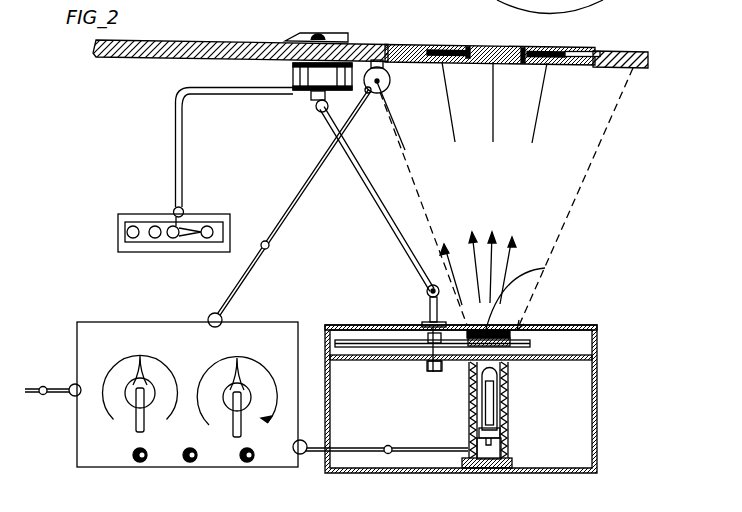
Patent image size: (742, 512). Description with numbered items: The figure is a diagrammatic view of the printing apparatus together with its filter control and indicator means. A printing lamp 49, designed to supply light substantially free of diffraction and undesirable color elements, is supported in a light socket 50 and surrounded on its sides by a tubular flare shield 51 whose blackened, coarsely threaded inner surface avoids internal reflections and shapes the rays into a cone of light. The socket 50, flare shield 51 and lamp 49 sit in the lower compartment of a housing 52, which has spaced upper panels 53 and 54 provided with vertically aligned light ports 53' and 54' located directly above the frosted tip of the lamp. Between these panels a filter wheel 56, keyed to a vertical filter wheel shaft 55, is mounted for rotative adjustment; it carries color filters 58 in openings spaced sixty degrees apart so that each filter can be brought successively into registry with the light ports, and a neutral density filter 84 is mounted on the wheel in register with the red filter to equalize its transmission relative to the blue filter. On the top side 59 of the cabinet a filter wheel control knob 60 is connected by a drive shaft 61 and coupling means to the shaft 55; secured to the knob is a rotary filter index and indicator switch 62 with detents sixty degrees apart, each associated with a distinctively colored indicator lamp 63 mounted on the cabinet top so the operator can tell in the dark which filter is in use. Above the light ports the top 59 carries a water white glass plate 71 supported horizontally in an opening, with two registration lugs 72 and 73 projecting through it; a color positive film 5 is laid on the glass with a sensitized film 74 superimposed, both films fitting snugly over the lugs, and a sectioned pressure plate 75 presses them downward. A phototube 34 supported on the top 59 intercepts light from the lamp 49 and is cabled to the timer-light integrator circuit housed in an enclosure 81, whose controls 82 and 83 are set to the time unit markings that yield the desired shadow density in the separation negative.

The color positive film 5 is at (430, 62).
The phototube 34 is at (377, 60).
The printing lamp 49 is at (492, 407).
The light socket 50 is at (499, 449).
The tubular flare shield 51 is at (469, 427).
The housing 52 is at (598, 428).
The upper panel 53 is at (485, 347).
The light port 53' is at (447, 382).
The upper panel 54 is at (466, 314).
The light port 54' is at (516, 318).
The vertical filter wheel shaft 55 is at (428, 318).
The filter wheel 56 is at (372, 347).
The color filter 58 is at (545, 268).
The cabinet top side 59 is at (648, 60).
The filter wheel control knob 60 is at (330, 34).
The drive shaft 61 is at (388, 223).
The filter index and indicator switch 62 is at (290, 70).
The indicator lamp 63 is at (207, 240).
The water white glass plate 71 is at (570, 63).
The registration lug 72 is at (459, 94).
The registration lug 73 is at (521, 63).
The sensitized film 74 is at (455, 45).
The sectioned pressure plate 75 is at (595, 51).
The enclosure 81 is at (88, 322).
The light unit integrator control 82 is at (125, 395).
The light unit integrator control 83 is at (235, 405).
The neutral density filter 84 is at (494, 347).